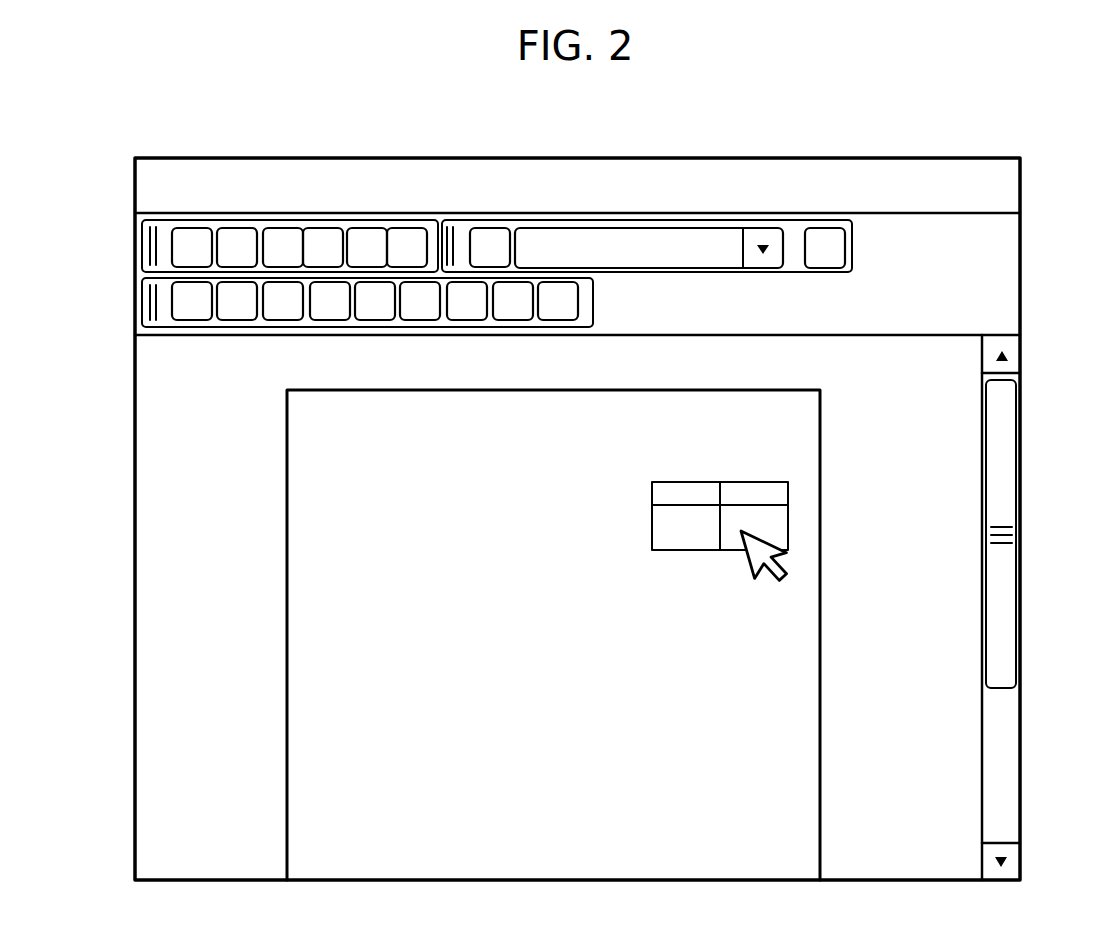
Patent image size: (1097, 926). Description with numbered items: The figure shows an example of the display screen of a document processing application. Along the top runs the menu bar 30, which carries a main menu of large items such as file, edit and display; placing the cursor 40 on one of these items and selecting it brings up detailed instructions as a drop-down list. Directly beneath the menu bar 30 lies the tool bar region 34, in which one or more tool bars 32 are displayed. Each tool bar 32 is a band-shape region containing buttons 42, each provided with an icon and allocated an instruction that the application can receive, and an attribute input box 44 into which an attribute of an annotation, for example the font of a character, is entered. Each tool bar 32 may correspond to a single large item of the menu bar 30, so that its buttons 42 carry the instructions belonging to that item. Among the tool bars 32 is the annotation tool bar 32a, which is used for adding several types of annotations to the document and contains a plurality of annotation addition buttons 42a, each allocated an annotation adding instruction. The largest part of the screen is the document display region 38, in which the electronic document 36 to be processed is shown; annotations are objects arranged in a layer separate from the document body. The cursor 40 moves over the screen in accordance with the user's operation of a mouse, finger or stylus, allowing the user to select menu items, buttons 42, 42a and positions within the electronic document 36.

The menu bar 30 is at (126, 190).
The tool bar 32 is at (611, 190).
The annotation tool bar 32a is at (617, 218).
The tool bar region 34 is at (122, 213).
The electronic document 36 is at (822, 413).
The document display region 38 is at (122, 340).
The cursor 40 is at (788, 550).
The button 42 is at (423, 230).
The annotation addition button 42a is at (618, 311).
The attribute input box 44 is at (697, 237).